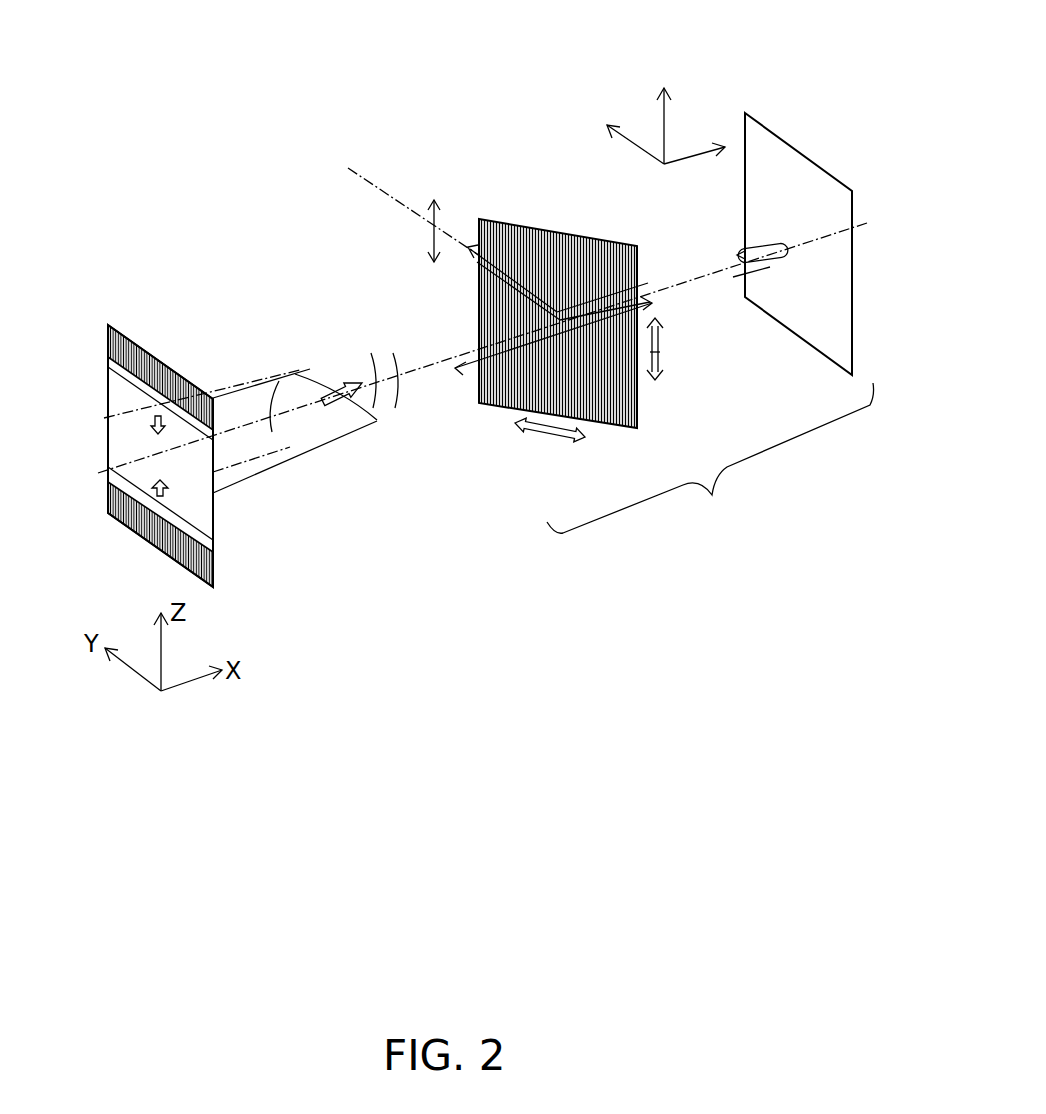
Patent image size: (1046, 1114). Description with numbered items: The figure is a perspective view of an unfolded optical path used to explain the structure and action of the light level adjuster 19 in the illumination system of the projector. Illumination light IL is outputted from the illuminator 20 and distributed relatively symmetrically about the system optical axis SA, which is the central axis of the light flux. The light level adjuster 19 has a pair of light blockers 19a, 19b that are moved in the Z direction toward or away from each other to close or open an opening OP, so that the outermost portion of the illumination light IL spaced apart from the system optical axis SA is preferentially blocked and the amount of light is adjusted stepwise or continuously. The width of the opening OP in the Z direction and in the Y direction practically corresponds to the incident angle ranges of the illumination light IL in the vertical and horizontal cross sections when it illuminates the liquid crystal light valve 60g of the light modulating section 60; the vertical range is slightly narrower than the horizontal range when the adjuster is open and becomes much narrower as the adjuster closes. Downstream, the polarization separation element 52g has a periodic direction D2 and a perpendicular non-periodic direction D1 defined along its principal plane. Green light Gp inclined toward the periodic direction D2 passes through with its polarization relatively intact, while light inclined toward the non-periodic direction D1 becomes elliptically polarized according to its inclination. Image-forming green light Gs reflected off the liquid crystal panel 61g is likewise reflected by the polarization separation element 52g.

The illuminator 20 is at (124, 309).
The light level adjuster 19 is at (108, 503).
The light blocker 19a is at (215, 577).
The light blocker 19b is at (167, 362).
The opening OP is at (210, 517).
The system optical axis SA is at (240, 432).
The illumination light IL is at (347, 378).
The light modulating section 60 is at (507, 121).
The polarization separation element 52g is at (530, 227).
The liquid crystal panel 61g is at (792, 146).
The image-forming green light Gs is at (648, 284).
The green light Gp is at (470, 370).
The non-periodic direction D1 is at (660, 352).
The periodic direction D2 is at (548, 443).
The liquid crystal light valve 60g is at (710, 458).